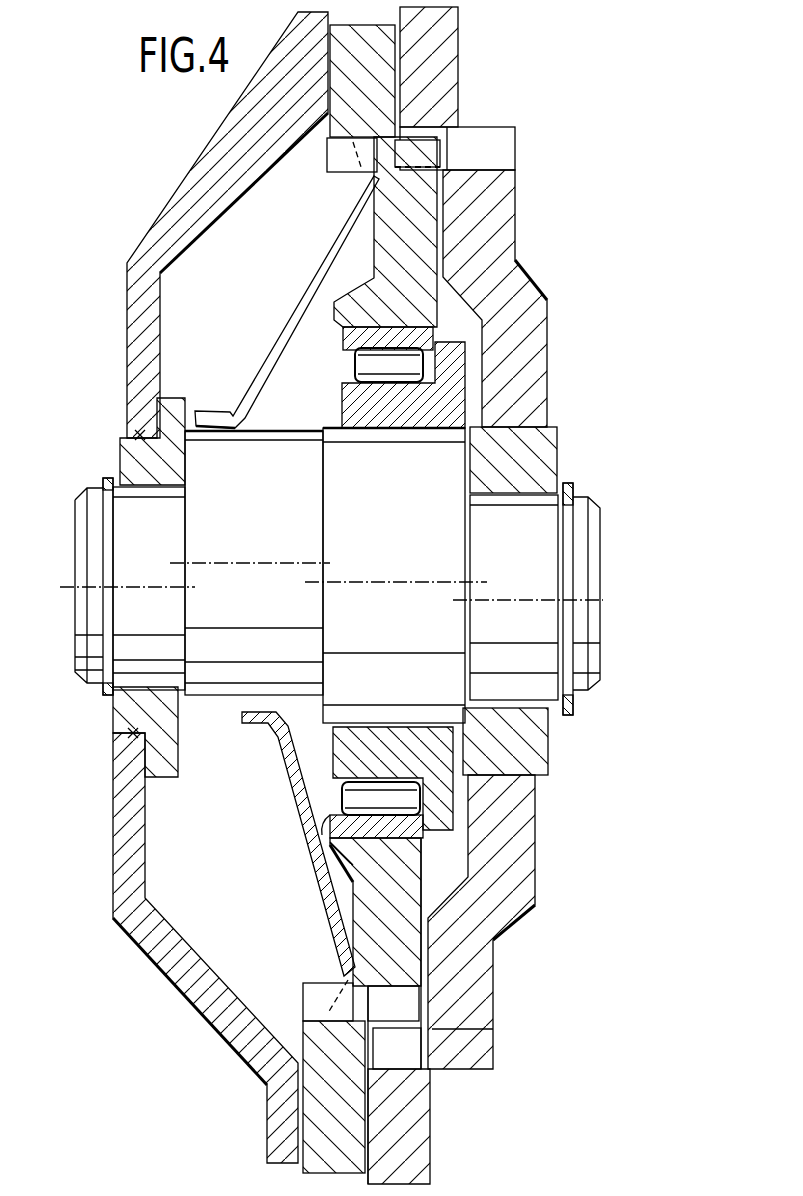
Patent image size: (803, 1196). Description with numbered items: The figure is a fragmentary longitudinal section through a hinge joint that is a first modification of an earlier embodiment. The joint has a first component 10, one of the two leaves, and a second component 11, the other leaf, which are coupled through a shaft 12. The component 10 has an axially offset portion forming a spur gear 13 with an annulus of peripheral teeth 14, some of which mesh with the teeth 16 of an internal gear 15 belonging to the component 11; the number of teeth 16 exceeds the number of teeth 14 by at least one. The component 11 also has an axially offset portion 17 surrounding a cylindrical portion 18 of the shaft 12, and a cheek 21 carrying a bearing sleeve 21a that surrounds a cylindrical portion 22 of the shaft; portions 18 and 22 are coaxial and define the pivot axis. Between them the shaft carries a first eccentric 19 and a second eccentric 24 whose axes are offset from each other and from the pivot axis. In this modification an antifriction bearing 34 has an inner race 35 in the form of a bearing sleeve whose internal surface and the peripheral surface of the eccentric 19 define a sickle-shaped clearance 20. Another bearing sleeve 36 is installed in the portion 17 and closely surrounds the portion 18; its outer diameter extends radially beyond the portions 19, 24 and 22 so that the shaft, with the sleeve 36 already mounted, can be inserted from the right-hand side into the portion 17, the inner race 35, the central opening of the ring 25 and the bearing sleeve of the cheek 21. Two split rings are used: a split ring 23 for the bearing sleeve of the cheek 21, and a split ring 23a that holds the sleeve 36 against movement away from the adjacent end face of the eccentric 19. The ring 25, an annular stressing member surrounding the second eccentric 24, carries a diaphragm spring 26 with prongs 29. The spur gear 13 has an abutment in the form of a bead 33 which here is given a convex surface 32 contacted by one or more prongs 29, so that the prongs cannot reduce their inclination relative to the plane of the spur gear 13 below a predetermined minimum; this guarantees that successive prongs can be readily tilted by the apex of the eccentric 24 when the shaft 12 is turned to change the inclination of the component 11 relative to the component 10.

The first component 10 is at (347, 1139).
The second component 11 is at (444, 94).
The shaft 12 is at (602, 548).
The spur gear 13 is at (417, 263).
The peripheral teeth 14 is at (398, 1003).
The internal gear 15 is at (400, 1073).
The teeth of internal gear 16 is at (405, 1048).
The axially offset portion 17 is at (515, 318).
The cylindrical portion 18 is at (519, 558).
The first eccentric 19 is at (396, 554).
The clearance 20 is at (442, 730).
The cheek 21 is at (243, 172).
The bearing sleeve 21a is at (133, 458).
The cylindrical portion 22 is at (152, 546).
The split ring 23 is at (103, 690).
The split ring 23a is at (568, 485).
The second eccentric 24 is at (253, 551).
The ring 25 is at (313, 890).
The diaphragm spring 26 is at (290, 778).
The prongs 29 is at (313, 283).
The convex surface 32 is at (327, 862).
The bead 33 is at (330, 853).
The antifriction bearing 34 is at (440, 330).
The inner race 35 is at (465, 387).
The bearing sleeve 36 is at (500, 462).